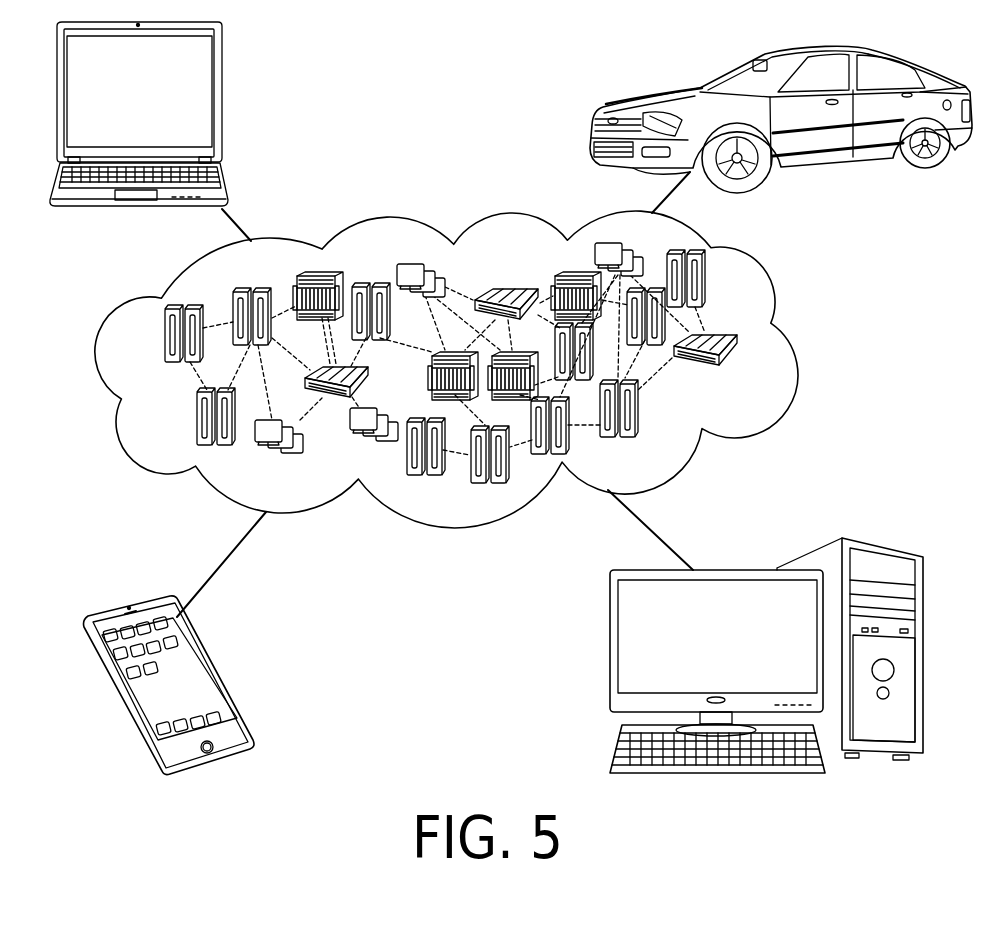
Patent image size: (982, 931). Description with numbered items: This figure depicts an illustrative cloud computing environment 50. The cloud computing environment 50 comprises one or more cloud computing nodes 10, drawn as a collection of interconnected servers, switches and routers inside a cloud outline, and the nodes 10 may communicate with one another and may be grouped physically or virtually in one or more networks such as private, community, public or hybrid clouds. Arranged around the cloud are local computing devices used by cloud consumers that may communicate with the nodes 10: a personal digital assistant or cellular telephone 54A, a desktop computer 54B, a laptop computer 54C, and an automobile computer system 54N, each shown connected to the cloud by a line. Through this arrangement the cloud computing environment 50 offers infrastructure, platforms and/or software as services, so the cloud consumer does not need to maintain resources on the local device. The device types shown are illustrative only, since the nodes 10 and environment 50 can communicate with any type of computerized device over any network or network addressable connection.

The cloud computing environment 50 is at (793, 350).
The cloud computing node 10 is at (740, 362).
The personal digital assistant (PDA) or cellular telephone 54A is at (193, 672).
The desktop computer 54B is at (812, 552).
The laptop computer 54C is at (199, 112).
The automobile computer system 54N is at (598, 122).